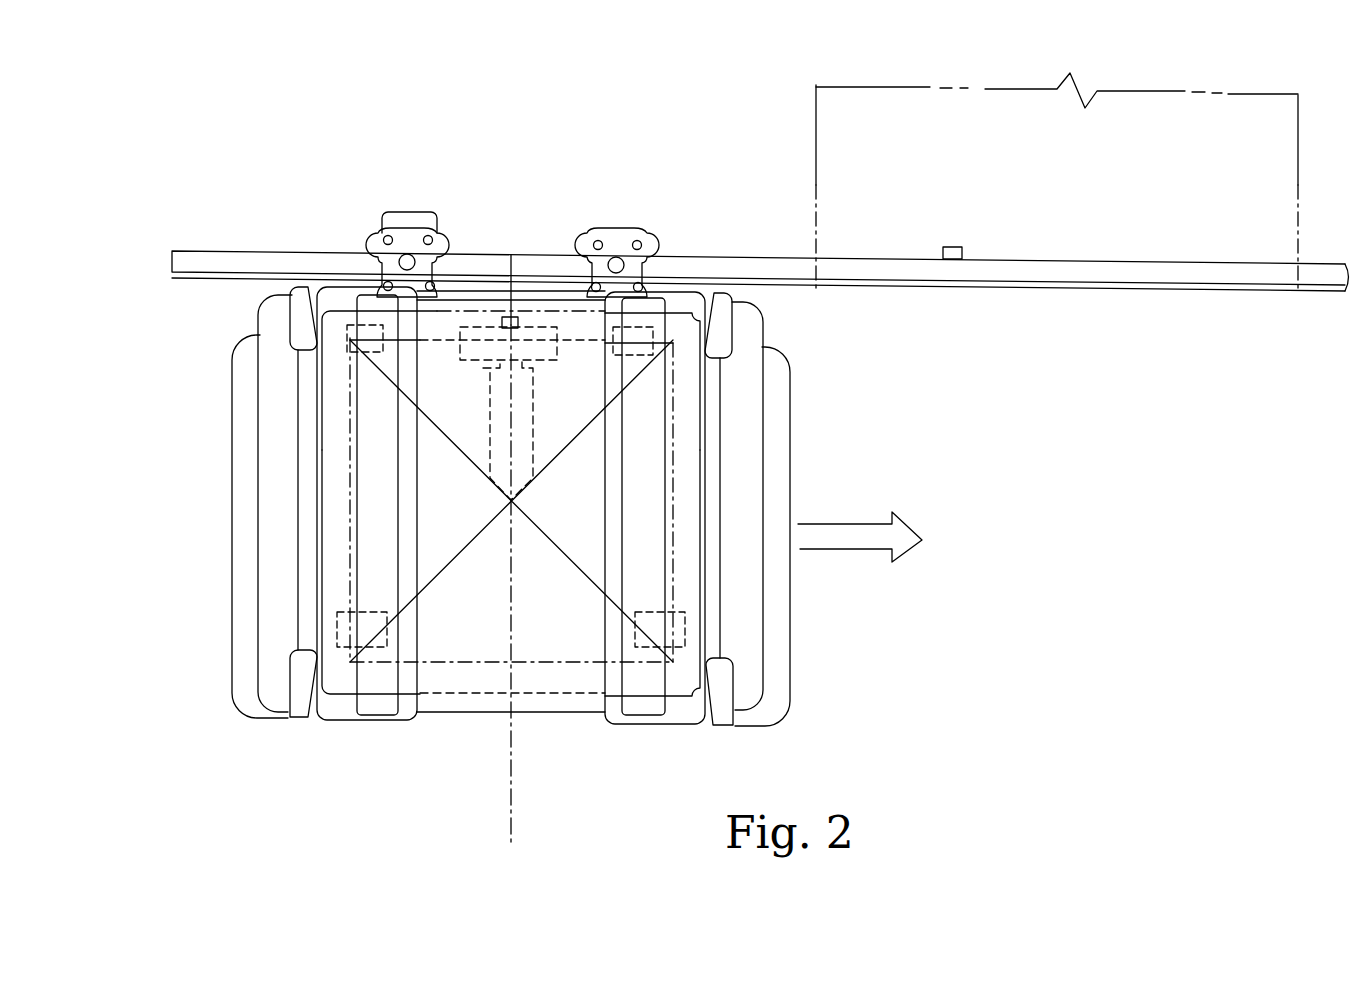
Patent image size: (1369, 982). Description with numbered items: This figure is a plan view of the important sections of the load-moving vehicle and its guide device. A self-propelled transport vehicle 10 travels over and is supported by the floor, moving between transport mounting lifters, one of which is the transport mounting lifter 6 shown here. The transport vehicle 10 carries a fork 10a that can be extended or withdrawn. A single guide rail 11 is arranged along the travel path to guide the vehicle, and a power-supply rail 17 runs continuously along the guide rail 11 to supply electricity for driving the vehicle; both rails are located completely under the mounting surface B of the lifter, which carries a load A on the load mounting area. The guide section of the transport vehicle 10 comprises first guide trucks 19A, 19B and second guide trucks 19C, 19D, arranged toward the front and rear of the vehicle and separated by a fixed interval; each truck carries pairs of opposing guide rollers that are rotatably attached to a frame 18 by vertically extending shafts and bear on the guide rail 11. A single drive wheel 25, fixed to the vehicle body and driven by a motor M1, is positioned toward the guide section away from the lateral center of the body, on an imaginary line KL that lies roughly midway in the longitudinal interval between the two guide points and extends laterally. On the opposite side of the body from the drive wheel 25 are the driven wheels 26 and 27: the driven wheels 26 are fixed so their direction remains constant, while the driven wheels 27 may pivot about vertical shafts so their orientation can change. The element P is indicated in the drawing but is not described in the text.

The transport mounting lifter 6 is at (815, 128).
The guide rail 11 is at (1160, 272).
The power-supply rail 17 is at (800, 287).
The mounting surface B is at (1040, 300).
The self-propelled transport vehicle 10 is at (226, 530).
The fork 10a is at (345, 708).
The frame 18 is at (405, 232).
The first guide truck 19A is at (601, 240).
The first guide truck 19B is at (634, 284).
The second guide truck 19C is at (386, 236).
The second guide truck 19D is at (426, 285).
The driven wheel 27 is at (372, 353).
The load A is at (527, 655).
The bottom plate P is at (472, 692).
The drive wheel 25 is at (462, 352).
The motor M1 is at (532, 440).
The driven wheel 26 is at (375, 612).
The imaginary line KL is at (514, 813).